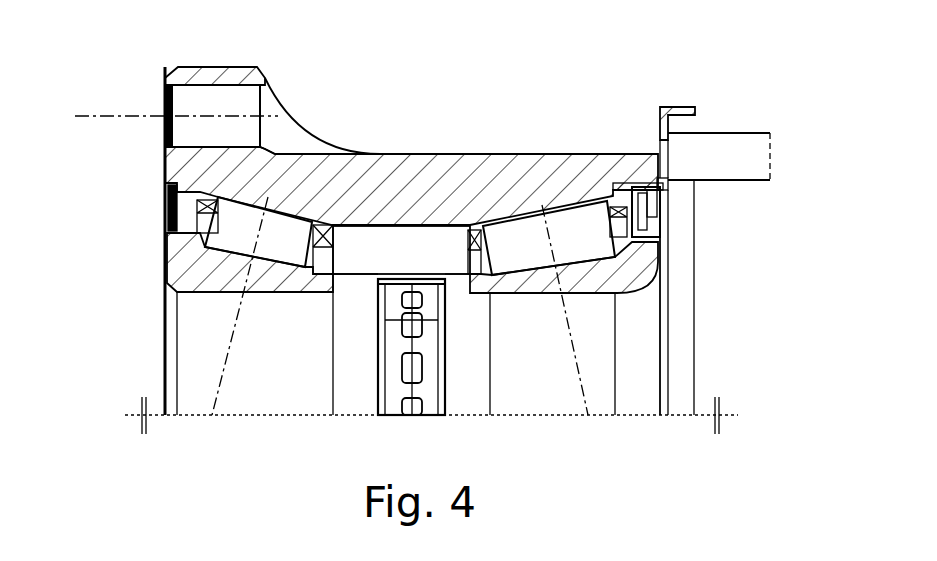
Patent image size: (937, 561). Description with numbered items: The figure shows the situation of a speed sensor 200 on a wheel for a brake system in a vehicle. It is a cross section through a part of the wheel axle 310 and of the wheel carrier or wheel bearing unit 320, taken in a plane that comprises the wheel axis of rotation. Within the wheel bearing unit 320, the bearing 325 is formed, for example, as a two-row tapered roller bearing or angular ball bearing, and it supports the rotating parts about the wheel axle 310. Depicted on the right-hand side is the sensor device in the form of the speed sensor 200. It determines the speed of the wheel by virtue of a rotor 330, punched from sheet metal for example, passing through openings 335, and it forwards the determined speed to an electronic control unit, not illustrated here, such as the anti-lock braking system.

The speed sensor 200 is at (755, 153).
The wheel axle 310 is at (150, 377).
The wheel bearing unit 320 is at (150, 175).
The bearing 325 is at (275, 192).
The rotor 330 is at (636, 185).
The openings 335 is at (672, 158).